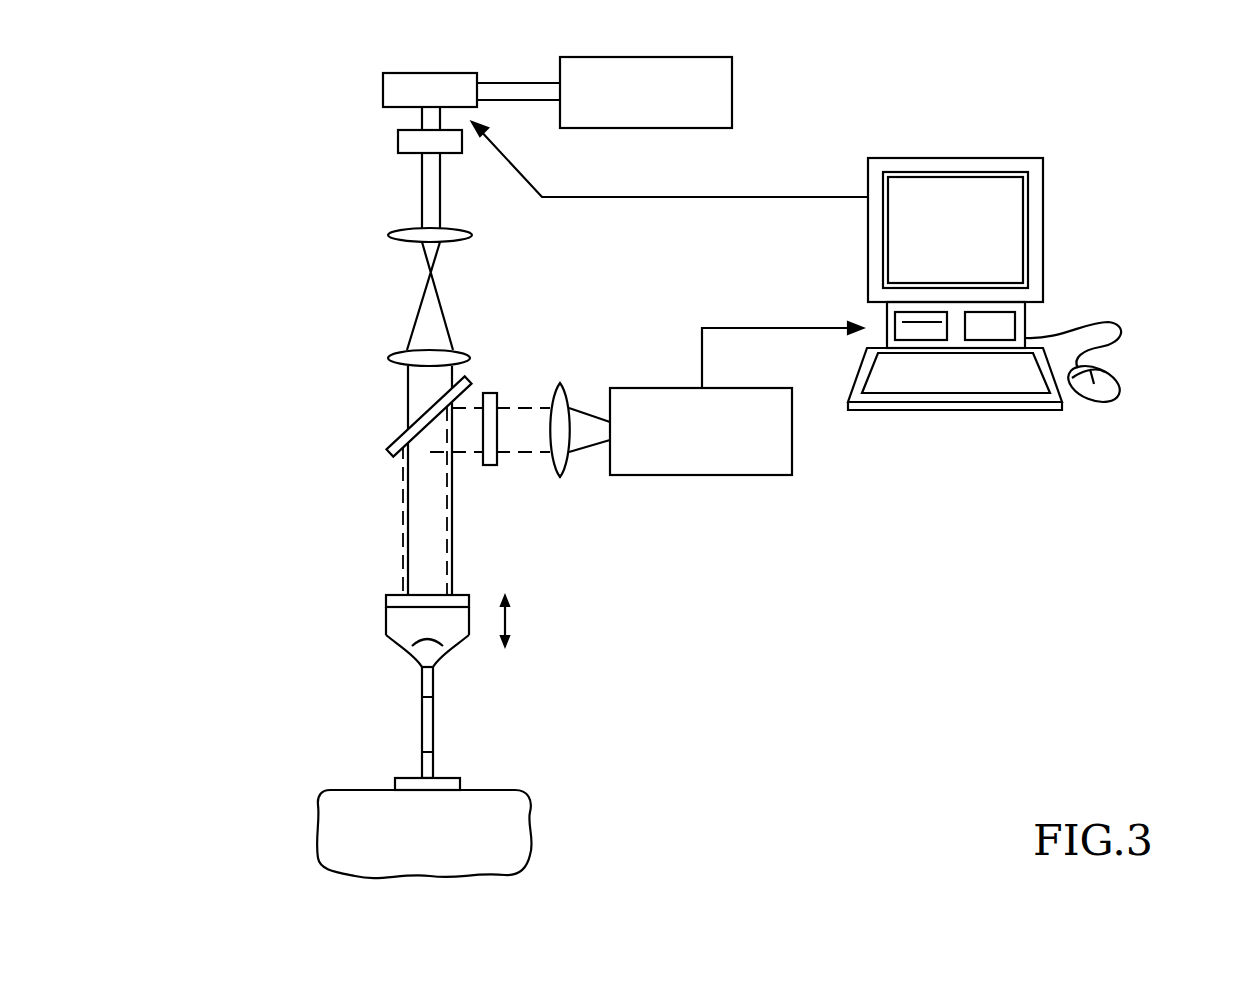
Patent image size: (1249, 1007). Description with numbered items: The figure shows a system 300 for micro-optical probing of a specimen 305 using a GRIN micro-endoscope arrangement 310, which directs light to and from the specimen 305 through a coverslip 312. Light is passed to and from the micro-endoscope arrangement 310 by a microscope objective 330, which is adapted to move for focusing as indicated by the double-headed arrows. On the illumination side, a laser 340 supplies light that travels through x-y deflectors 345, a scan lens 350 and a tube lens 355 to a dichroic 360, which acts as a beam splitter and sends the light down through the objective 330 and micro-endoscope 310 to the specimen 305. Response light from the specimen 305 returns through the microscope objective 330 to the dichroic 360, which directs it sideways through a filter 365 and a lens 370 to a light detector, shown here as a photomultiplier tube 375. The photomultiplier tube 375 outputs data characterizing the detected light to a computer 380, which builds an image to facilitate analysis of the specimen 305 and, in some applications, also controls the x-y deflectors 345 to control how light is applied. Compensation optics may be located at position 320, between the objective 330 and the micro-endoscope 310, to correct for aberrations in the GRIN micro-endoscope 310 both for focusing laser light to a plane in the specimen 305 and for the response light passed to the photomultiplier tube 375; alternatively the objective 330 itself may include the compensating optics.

The system 300 is at (1155, 122).
The specimen 305 is at (518, 792).
The GRIN micro-endoscope arrangement 310 is at (435, 722).
The coverslip 312 is at (452, 778).
The position of compensation optics 320 is at (440, 650).
The microscope objective 330 is at (462, 595).
The laser 340 is at (732, 77).
The x-y deflectors 345 is at (383, 85).
The scan lens 350 is at (455, 227).
The tube lens 355 is at (464, 353).
The dichroic 360 is at (468, 380).
The filter 365 is at (490, 394).
The lens 370 is at (563, 384).
The photomultiplier tube 375 is at (745, 388).
The computer 380 is at (1043, 225).